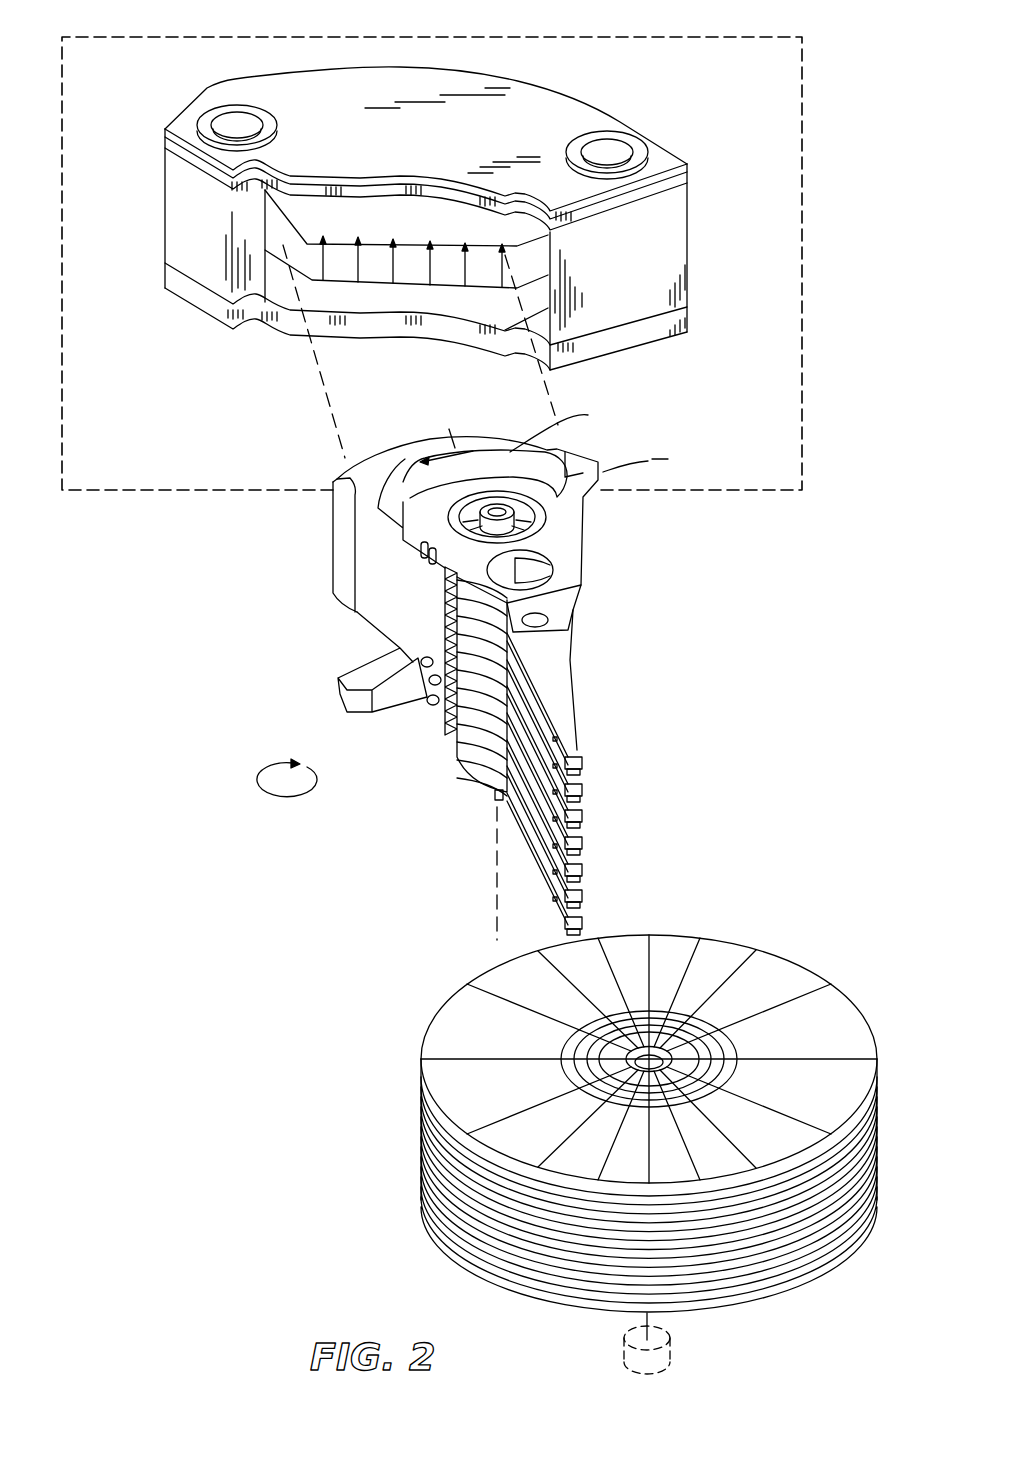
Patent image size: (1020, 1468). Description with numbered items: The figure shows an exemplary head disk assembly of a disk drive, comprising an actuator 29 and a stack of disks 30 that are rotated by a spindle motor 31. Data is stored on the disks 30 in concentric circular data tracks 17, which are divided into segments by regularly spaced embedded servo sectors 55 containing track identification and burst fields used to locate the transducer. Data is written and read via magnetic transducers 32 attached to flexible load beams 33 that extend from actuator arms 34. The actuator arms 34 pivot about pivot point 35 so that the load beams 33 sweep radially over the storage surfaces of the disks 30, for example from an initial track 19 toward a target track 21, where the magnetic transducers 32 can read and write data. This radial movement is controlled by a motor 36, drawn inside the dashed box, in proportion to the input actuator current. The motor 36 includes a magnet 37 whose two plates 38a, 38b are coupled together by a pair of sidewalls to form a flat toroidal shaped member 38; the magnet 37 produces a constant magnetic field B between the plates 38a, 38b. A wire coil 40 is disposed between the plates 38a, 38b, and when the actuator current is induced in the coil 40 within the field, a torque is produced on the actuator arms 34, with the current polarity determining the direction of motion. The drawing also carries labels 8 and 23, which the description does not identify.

The motor 36 is at (804, 249).
The magnet 37 is at (552, 75).
The flat toroidal shaped member 38 is at (672, 246).
The plate 38a is at (375, 214).
The plate 38b is at (366, 305).
The electric field lines 8 is at (305, 239).
The wire coil 40 is at (385, 467).
The pivot point 35 is at (538, 513).
The actuator arms 34 is at (575, 588).
The flexible load beams 33 is at (568, 684).
The magnetic transducers 32 is at (582, 758).
The actuator 29 is at (148, 588).
The servo sectors 55 is at (450, 1060).
The data tracks 17 is at (680, 1010).
The sector 23 is at (712, 1012).
The initial track 19 is at (748, 1040).
The target track 21 is at (748, 1052).
The disks 30 is at (714, 1283).
The spindle motor 31 is at (622, 1358).